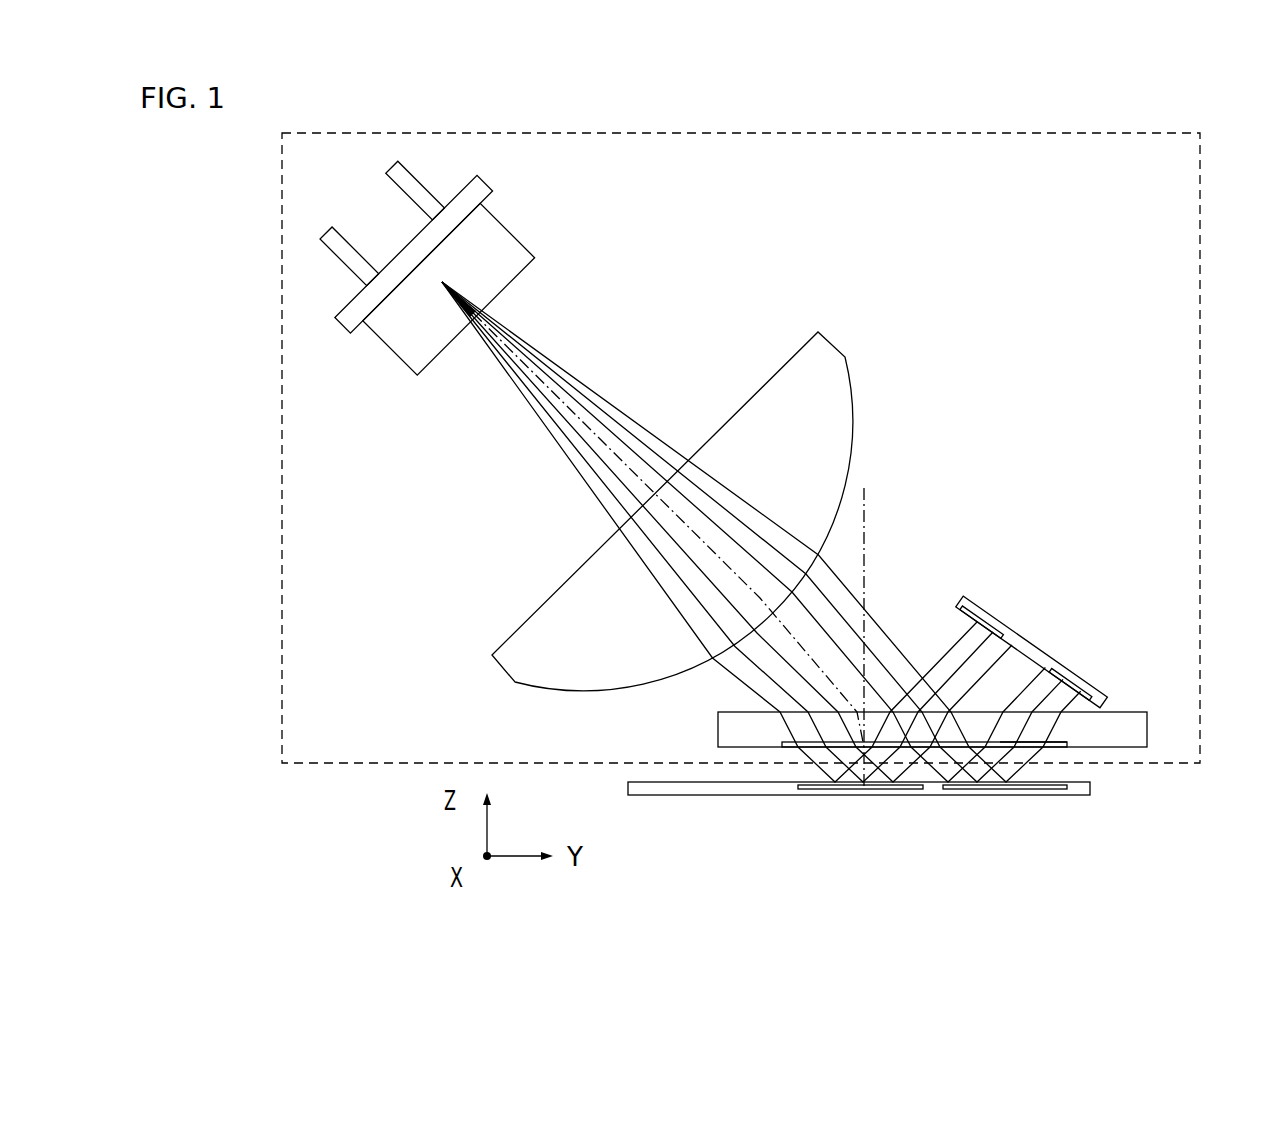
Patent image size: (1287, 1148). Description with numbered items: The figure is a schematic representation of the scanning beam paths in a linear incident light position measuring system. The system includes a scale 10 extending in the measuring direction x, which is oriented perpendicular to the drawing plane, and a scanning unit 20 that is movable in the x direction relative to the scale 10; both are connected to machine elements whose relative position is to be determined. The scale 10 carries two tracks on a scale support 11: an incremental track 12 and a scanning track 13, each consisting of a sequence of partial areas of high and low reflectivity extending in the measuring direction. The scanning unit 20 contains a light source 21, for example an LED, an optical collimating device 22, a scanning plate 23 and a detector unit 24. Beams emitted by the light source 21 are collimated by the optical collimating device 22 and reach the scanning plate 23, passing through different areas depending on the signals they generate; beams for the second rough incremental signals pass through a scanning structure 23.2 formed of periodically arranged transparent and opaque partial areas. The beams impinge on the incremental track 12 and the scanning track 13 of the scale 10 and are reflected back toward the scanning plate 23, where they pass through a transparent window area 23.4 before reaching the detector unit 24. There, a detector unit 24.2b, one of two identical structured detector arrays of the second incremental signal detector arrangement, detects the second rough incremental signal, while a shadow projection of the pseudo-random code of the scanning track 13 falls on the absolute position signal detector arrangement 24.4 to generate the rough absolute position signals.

The scale 10 is at (888, 830).
The scale support 11 is at (1090, 790).
The incremental track 12 is at (818, 790).
The scanning track 13 is at (993, 790).
The scanning unit 20 is at (262, 647).
The light source 21 is at (513, 247).
The optical collimating device 22 is at (552, 627).
The scanning plate 23 is at (1156, 734).
The scanning structure 23.2 is at (805, 741).
The transparent window area 23.4 is at (1050, 743).
The detector unit 24 is at (1037, 642).
The detector unit of second incremental signal detector arrangement 24.2b is at (987, 608).
The absolute position signal detector arrangement 24.4 is at (1070, 668).